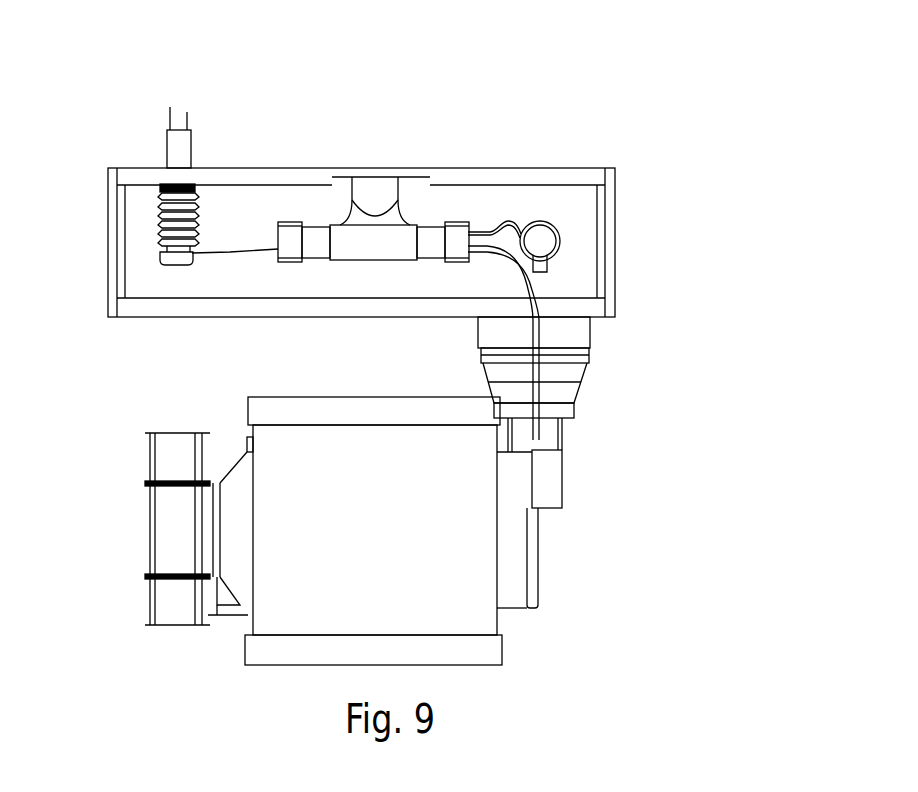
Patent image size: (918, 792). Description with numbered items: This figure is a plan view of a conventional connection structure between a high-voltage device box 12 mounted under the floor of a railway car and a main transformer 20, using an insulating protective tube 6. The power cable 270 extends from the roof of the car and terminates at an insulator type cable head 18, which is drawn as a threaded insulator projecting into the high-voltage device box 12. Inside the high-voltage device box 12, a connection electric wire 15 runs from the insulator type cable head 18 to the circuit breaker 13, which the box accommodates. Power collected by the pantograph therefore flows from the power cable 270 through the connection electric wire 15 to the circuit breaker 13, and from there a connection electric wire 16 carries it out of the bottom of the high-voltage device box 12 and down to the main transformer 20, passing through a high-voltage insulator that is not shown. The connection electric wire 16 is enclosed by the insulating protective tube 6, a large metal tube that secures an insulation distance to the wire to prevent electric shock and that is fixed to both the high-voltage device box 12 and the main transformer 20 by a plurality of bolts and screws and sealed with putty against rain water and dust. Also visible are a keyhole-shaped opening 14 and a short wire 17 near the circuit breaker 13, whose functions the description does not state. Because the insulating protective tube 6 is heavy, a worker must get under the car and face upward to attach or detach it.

The insulating protective tube 6 is at (588, 370).
The high-voltage device box 12 is at (615, 197).
The circuit breaker 13 is at (408, 228).
The keyhole opening 14 is at (546, 228).
The connection electric wire 15 is at (226, 252).
The connection electric wire 16 is at (540, 292).
The wire 17 is at (500, 223).
The insulator type cable head 18 is at (155, 208).
The main transformer 20 is at (250, 440).
The power cable 270 is at (188, 112).